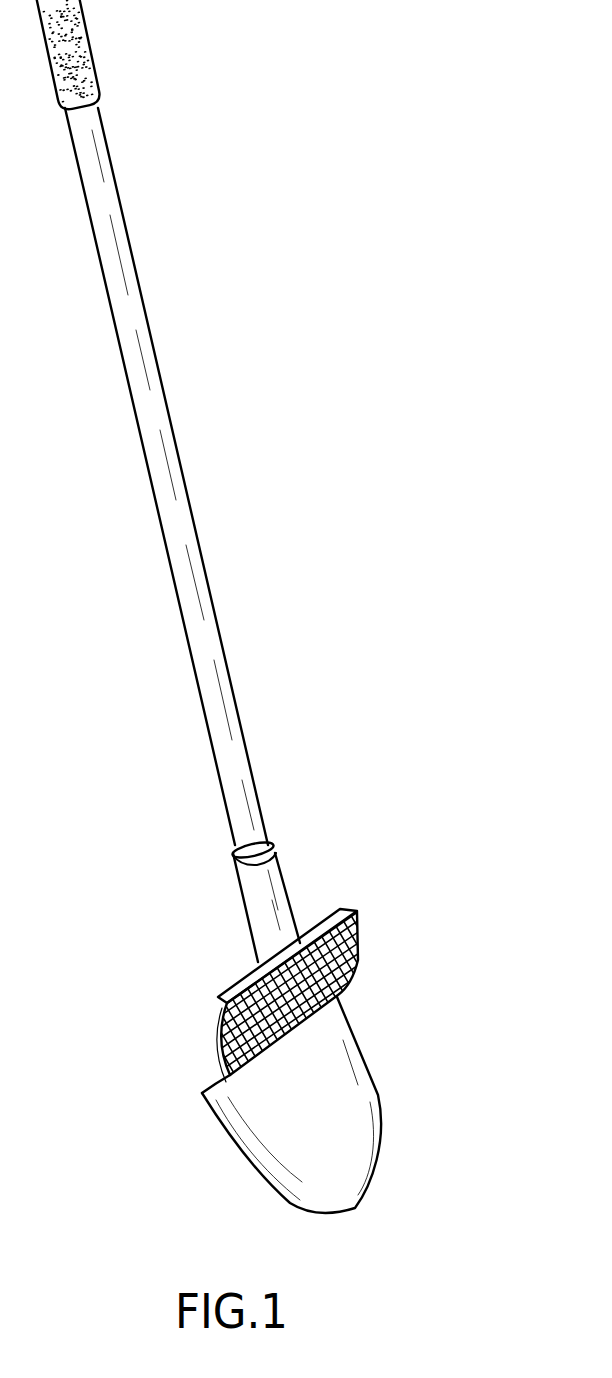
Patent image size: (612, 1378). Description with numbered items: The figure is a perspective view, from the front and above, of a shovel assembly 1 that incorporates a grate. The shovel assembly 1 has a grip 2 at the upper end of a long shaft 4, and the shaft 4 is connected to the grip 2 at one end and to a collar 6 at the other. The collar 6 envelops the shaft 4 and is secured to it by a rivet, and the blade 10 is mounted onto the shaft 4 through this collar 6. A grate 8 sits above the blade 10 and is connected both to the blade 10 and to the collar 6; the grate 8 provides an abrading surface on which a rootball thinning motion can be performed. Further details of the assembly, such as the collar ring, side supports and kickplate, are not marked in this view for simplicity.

The shovel assembly 1 is at (86, 625).
The grip 2 is at (80, 63).
The shaft 4 is at (158, 393).
The collar 6 is at (285, 900).
The grate 8 is at (362, 952).
The blade 10 is at (378, 1097).